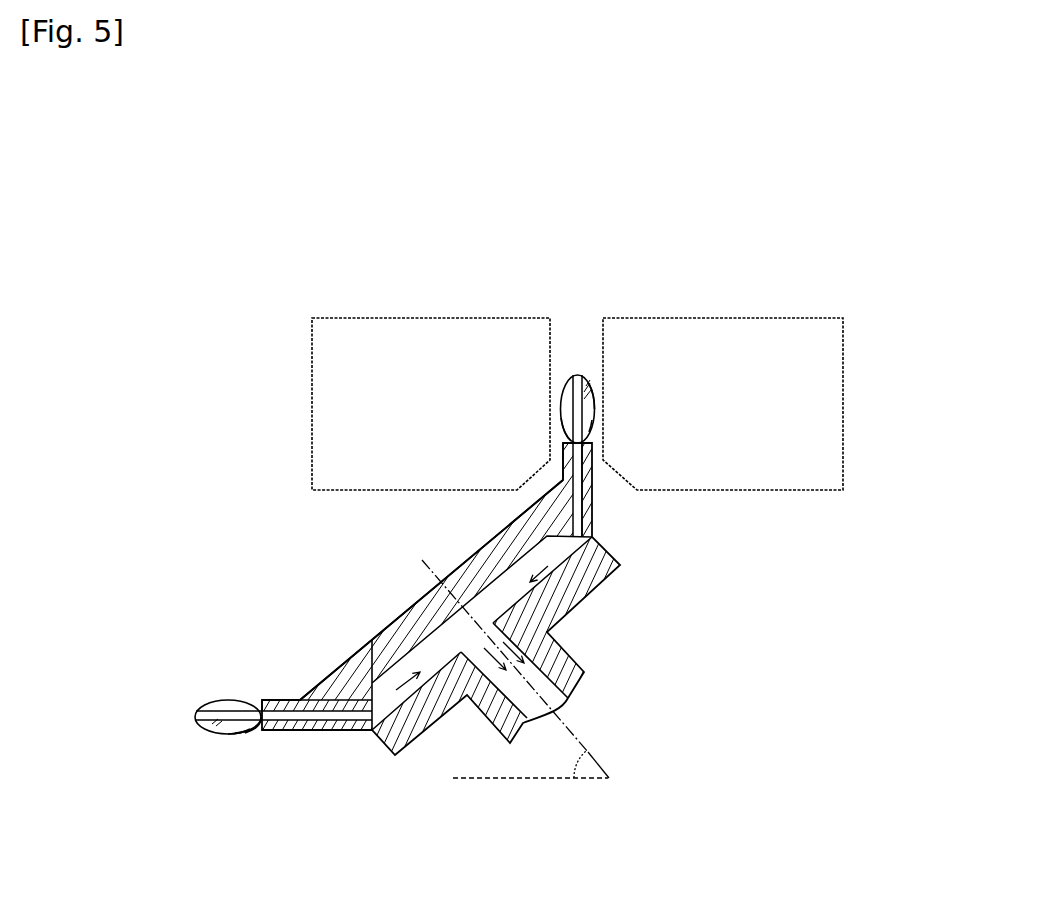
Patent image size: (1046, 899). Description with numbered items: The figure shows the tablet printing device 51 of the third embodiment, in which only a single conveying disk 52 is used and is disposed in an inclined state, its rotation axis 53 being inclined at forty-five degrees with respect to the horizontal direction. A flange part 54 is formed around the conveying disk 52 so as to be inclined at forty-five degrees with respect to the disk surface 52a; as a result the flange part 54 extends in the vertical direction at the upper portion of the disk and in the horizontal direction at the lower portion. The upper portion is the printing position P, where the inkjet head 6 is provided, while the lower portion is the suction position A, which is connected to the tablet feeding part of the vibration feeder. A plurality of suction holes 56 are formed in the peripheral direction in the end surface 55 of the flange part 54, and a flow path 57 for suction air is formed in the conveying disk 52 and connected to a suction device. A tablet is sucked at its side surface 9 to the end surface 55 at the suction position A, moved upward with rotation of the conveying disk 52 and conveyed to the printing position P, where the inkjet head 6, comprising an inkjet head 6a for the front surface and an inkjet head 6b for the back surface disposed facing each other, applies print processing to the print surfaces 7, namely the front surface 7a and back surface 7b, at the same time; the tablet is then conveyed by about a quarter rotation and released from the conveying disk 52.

The inkjet head 6 is at (577, 350).
The inkjet head for front surface 6a is at (780, 340).
The inkjet head for back surface 6b is at (355, 340).
The print surfaces 7 is at (427, 577).
The front surface 7a is at (595, 404).
The back surface 7b is at (566, 404).
The side surface 9 is at (575, 375).
The tablet printing device 51 is at (475, 543).
The conveying disk 52 is at (391, 640).
The disk surface 52a is at (478, 548).
The rotation axis 53 is at (558, 652).
The flange part 54 is at (594, 482).
The end surface 55 is at (566, 436).
The suction holes 56 is at (561, 416).
The flow path 57 is at (552, 701).
The printing position P is at (599, 427).
The suction position A is at (246, 741).